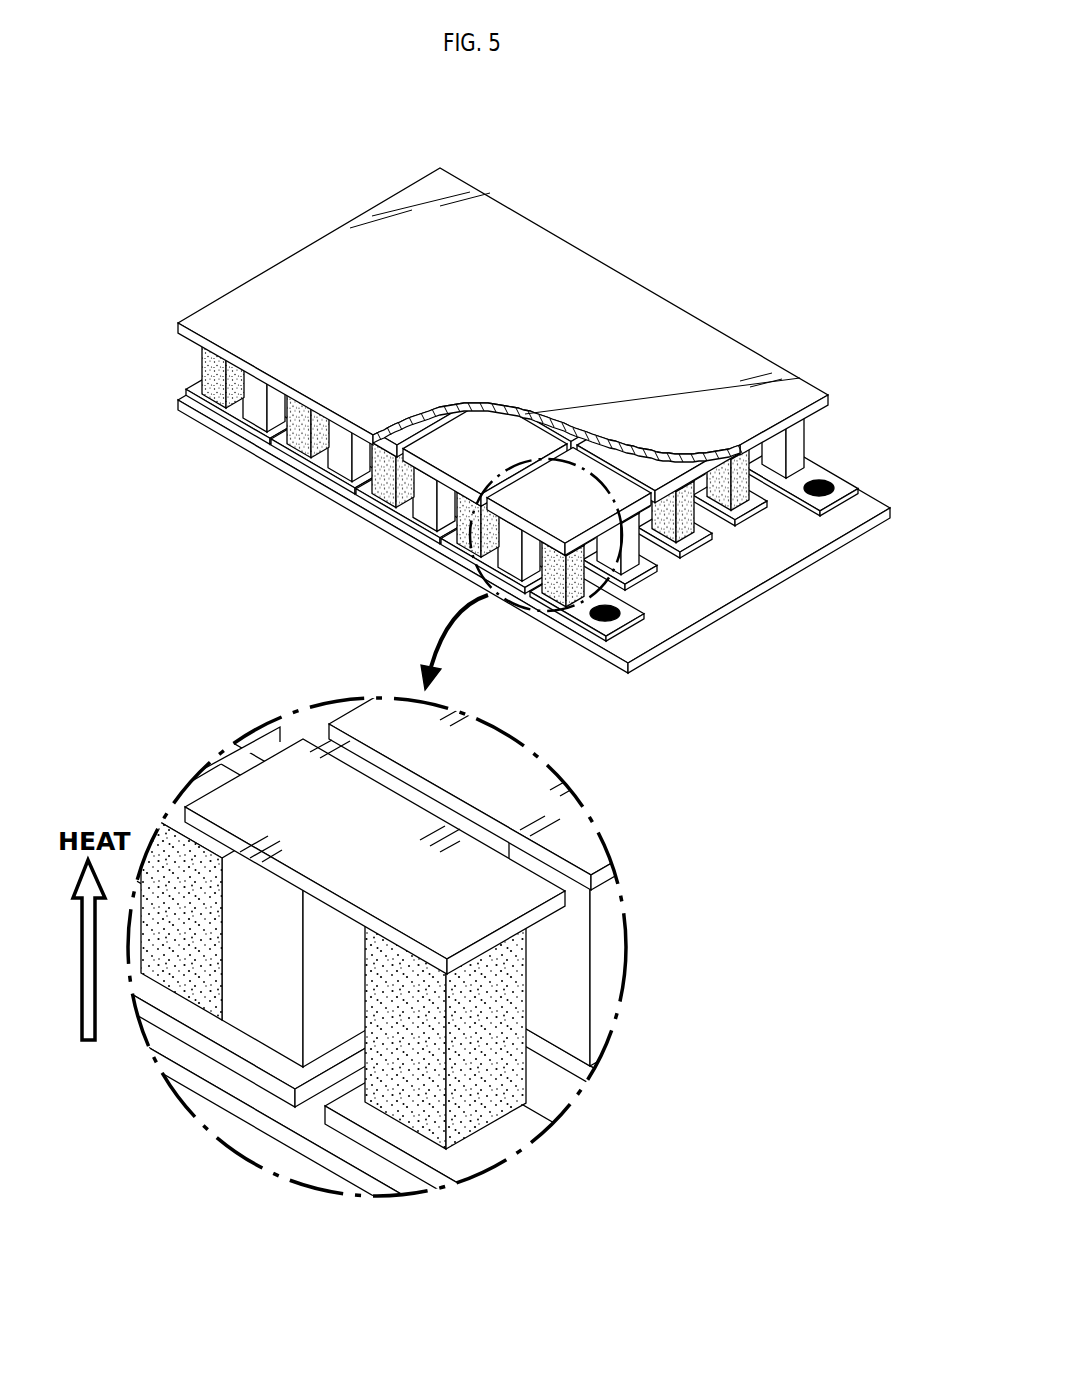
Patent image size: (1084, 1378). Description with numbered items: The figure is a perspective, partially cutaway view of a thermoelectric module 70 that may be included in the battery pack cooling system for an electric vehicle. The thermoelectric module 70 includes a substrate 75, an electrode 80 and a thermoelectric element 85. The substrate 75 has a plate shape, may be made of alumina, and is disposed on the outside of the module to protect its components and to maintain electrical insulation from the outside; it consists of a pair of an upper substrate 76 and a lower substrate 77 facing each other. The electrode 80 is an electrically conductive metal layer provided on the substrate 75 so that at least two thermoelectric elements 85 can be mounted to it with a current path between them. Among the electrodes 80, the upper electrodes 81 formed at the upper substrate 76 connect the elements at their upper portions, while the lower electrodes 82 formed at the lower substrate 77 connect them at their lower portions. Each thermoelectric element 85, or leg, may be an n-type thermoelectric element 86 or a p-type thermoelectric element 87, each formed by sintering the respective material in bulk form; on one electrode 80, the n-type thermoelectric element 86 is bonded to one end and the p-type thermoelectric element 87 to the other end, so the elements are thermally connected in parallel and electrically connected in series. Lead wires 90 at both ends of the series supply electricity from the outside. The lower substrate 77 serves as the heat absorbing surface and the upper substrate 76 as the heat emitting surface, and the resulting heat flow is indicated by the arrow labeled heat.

The thermoelectric module 70 is at (542, 733).
The substrate 75 is at (900, 342).
The upper substrate 76 is at (786, 381).
The lower substrate 77 is at (864, 493).
The electrode 80 is at (352, 543).
The upper electrode 81 is at (442, 463).
The lower electrode 82 is at (405, 508).
The thermoelectric element 85 is at (236, 477).
The n-type thermoelectric element 86 is at (338, 458).
The p-type thermoelectric element 87 is at (303, 443).
The lead wire 90 is at (826, 477).